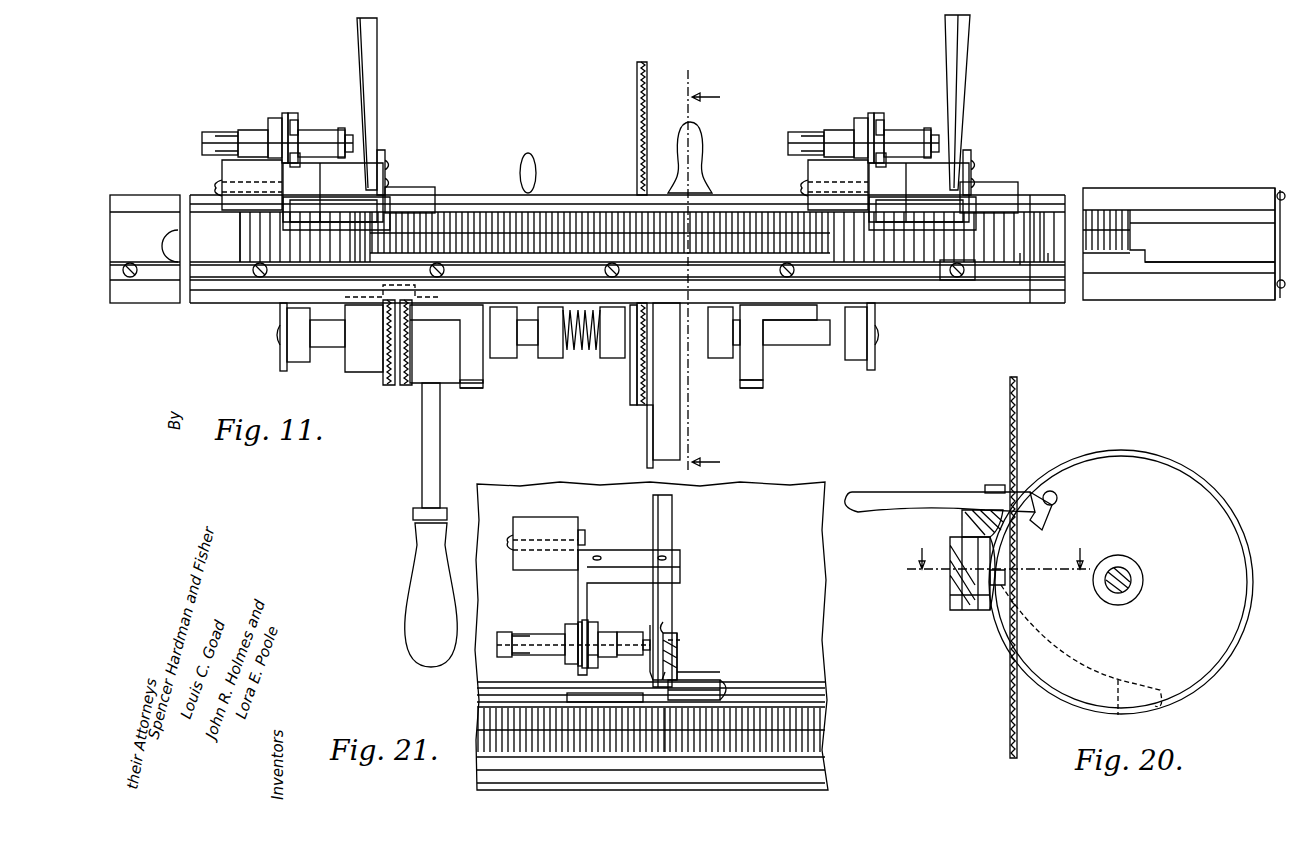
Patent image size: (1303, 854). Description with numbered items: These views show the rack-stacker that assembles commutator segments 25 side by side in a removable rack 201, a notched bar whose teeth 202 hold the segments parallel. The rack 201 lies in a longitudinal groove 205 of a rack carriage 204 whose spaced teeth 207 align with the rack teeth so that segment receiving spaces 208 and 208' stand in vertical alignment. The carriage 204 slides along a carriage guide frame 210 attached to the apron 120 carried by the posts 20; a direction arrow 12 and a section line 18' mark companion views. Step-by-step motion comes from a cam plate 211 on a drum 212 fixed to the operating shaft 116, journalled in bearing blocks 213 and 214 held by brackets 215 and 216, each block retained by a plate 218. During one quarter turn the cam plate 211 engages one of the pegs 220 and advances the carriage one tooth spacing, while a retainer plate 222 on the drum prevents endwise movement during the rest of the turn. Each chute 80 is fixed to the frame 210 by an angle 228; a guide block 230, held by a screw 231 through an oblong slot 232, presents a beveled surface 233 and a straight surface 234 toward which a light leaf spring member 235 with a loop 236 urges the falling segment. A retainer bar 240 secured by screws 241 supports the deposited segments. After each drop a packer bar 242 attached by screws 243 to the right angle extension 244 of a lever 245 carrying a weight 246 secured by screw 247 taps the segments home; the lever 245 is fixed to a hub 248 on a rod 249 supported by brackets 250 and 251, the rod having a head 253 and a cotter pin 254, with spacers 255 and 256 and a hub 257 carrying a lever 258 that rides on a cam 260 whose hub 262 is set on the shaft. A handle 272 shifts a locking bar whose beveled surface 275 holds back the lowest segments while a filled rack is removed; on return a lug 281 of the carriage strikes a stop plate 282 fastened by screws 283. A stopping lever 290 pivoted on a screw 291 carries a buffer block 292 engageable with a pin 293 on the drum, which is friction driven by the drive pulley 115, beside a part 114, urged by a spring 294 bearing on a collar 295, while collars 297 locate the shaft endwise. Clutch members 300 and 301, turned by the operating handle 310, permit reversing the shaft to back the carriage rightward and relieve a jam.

In FIG. 11, the machine section 12 is at (178, 107).
In FIG. 20, the section line 18' is at (1000, 555).
In FIG. 11, the post 20 is at (713, 270).
In FIG. 11, the commutator segment 25 is at (305, 262).
In FIG. 21, the commutator segment 25 is at (670, 640).
In FIG. 20, the commutator segment 25 is at (955, 592).
In FIG. 11, the chute 80 is at (375, 85).
In FIG. 21, the chute 80 is at (668, 514).
In FIG. 11, the toothed rod 114 is at (640, 405).
In FIG. 11, the drive pulley 115 is at (630, 400).
In FIG. 11, the operating shaft 116 is at (530, 347).
In FIG. 20, the operating shaft 116 is at (1132, 578).
In FIG. 20, the apron 120 is at (1018, 422).
In FIG. 11, the rack 201 is at (238, 245).
In FIG. 21, the rack 201 is at (772, 740).
In FIG. 20, the rack 201 is at (978, 612).
In FIG. 11, the rack teeth 202 is at (1048, 250).
In FIG. 20, the rack teeth 202 is at (955, 572).
In FIG. 11, the rack carriage 204 is at (1130, 212).
In FIG. 21, the rack carriage 204 is at (767, 707).
In FIG. 20, the rack carriage 204 is at (985, 612).
In FIG. 20, the groove 205 is at (960, 523).
In FIG. 11, the carriage teeth 207 is at (1038, 215).
In FIG. 11, the segment receiving space 208 is at (1022, 205).
In FIG. 21, the segment receiving space 208 is at (676, 755).
In FIG. 11, the segment receiving space 208' is at (1006, 293).
In FIG. 11, the carriage guide frame 210 is at (268, 305).
In FIG. 21, the carriage guide frame 210 is at (742, 683).
In FIG. 11, the cam plate 211 is at (648, 445).
In FIG. 20, the cam plate 211 is at (1065, 700).
In FIG. 11, the drum 212 is at (670, 424).
In FIG. 20, the drum 212 is at (1203, 665).
In FIG. 11, the bearing block 213 is at (468, 388).
In FIG. 11, the bearing block 214 is at (768, 372).
In FIG. 11, the bracket 215 is at (460, 337).
In FIG. 11, the bracket 216 is at (755, 353).
In FIG. 11, the retaining plate 218 is at (458, 390).
In FIG. 20, the peg 220 is at (995, 580).
In FIG. 20, the rack carriage retainer plate 222 is at (1222, 492).
In FIG. 11, the angle 228 is at (386, 180).
In FIG. 21, the angle 228 is at (672, 635).
In FIG. 11, the guide block 230 is at (420, 192).
In FIG. 21, the guide block 230 is at (708, 682).
In FIG. 21, the screw 231 is at (690, 670).
In FIG. 21, the oblong slot 232 is at (682, 672).
In FIG. 21, the beveled surface 233 is at (678, 640).
In FIG. 21, the straight surface 234 is at (722, 682).
In FIG. 21, the leaf spring member 235 is at (650, 625).
In FIG. 21, the loop 236 is at (655, 687).
In FIG. 11, the retainer bar 240 is at (230, 270).
In FIG. 20, the retainer bar 240 is at (958, 598).
In FIG. 11, the screw 241 is at (258, 280).
In FIG. 11, the packer bar 242 is at (340, 225).
In FIG. 21, the packer bar 242 is at (640, 568).
In FIG. 11, the screw 243 is at (626, 209).
In FIG. 11, the right angle extension 244 is at (300, 198).
In FIG. 11, the lever 245 is at (295, 122).
In FIG. 21, the lever 245 is at (592, 620).
In FIG. 11, the weight 246 is at (234, 170).
In FIG. 21, the weight 246 is at (529, 520).
In FIG. 11, the screw 247 is at (217, 185).
In FIG. 21, the screw 247 is at (510, 540).
In FIG. 11, the hub 248 is at (292, 160).
In FIG. 21, the hub 248 is at (594, 650).
In FIG. 11, the rod 249 is at (258, 133).
In FIG. 21, the rod 249 is at (522, 633).
In FIG. 11, the bracket 250 is at (220, 132).
In FIG. 21, the bracket 250 is at (512, 633).
In FIG. 11, the bracket 251 is at (345, 128).
In FIG. 21, the bracket 251 is at (630, 640).
In FIG. 11, the head 253 is at (210, 142).
In FIG. 21, the head 253 is at (500, 645).
In FIG. 11, the cotter pin 254 is at (353, 135).
In FIG. 21, the cotter pin 254 is at (645, 652).
In FIG. 11, the spacer 255 is at (308, 137).
In FIG. 21, the spacer 255 is at (605, 640).
In FIG. 11, the spacer 256 is at (272, 118).
In FIG. 21, the spacer 256 is at (565, 633).
In FIG. 11, the hub 257 is at (284, 113).
In FIG. 21, the hub 257 is at (578, 635).
In FIG. 11, the lever 258 is at (291, 113).
In FIG. 21, the lever 258 is at (584, 620).
In FIG. 11, the cam 260 is at (280, 365).
In FIG. 11, the hub 262 is at (300, 355).
In FIG. 11, the handle 272 is at (532, 165).
In FIG. 21, the beveled surface 275 is at (567, 697).
In FIG. 11, the lug 281 is at (1155, 268).
In FIG. 11, the stop plate 282 is at (1272, 240).
In FIG. 11, the screw 283 is at (1280, 192).
In FIG. 11, the lever 290 is at (698, 142).
In FIG. 20, the lever 290 is at (870, 500).
In FIG. 20, the screw 291 is at (984, 488).
In FIG. 20, the buffer block 292 is at (1036, 528).
In FIG. 20, the pin 293 is at (1057, 496).
In FIG. 11, the spring 294 is at (598, 355).
In FIG. 11, the collar 295 is at (560, 355).
In FIG. 11, the collar 297 is at (510, 360).
In FIG. 11, the clutch member 300 is at (405, 386).
In FIG. 11, the clutch member 301 is at (383, 380).
In FIG. 11, the operating handle 310 is at (405, 615).